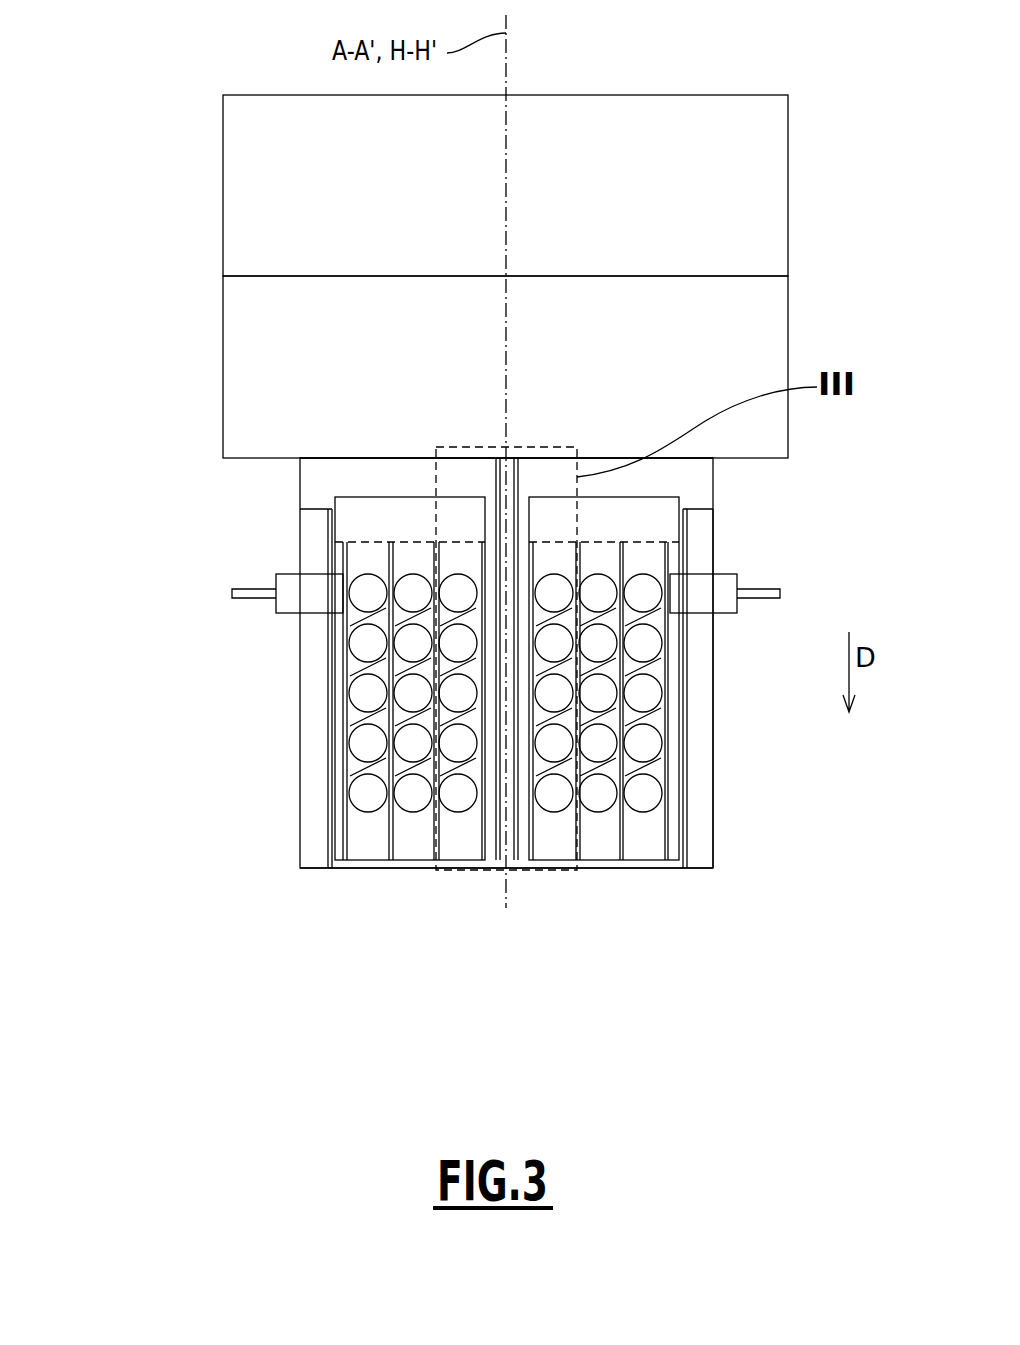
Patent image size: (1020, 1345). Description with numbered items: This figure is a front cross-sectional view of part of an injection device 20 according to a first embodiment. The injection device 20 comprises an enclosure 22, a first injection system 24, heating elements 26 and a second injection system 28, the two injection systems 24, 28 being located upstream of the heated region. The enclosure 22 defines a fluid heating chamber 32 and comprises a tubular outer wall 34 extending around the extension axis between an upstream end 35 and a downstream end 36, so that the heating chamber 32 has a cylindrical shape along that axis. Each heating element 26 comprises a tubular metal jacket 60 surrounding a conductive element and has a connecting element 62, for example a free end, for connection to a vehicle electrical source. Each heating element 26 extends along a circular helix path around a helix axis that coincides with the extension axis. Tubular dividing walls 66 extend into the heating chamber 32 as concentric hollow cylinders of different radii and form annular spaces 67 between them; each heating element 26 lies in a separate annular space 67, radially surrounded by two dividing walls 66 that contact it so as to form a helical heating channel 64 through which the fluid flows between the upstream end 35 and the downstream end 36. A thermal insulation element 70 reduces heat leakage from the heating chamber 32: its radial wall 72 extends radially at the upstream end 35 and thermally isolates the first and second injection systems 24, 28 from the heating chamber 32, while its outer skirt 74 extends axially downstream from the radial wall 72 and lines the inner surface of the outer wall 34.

The injection device 20 is at (170, 223).
The enclosure 22 is at (716, 790).
The first injection system 24 is at (790, 200).
The heating element 26 is at (458, 813).
The second injection system 28 is at (790, 330).
The fluid heating chamber 32 is at (348, 503).
The tubular outer wall 34 is at (698, 720).
The upstream end 35 is at (716, 521).
The downstream end 36 is at (716, 840).
The tubular metal jacket 60 is at (655, 563).
The connecting element 62 is at (285, 613).
The heating channel 64 is at (450, 725).
The tubular dividing wall 66 is at (538, 845).
The annular space 67 is at (458, 556).
The thermal insulation element 70 is at (298, 475).
The radial wall 72 is at (673, 472).
The outer skirt 74 is at (685, 658).